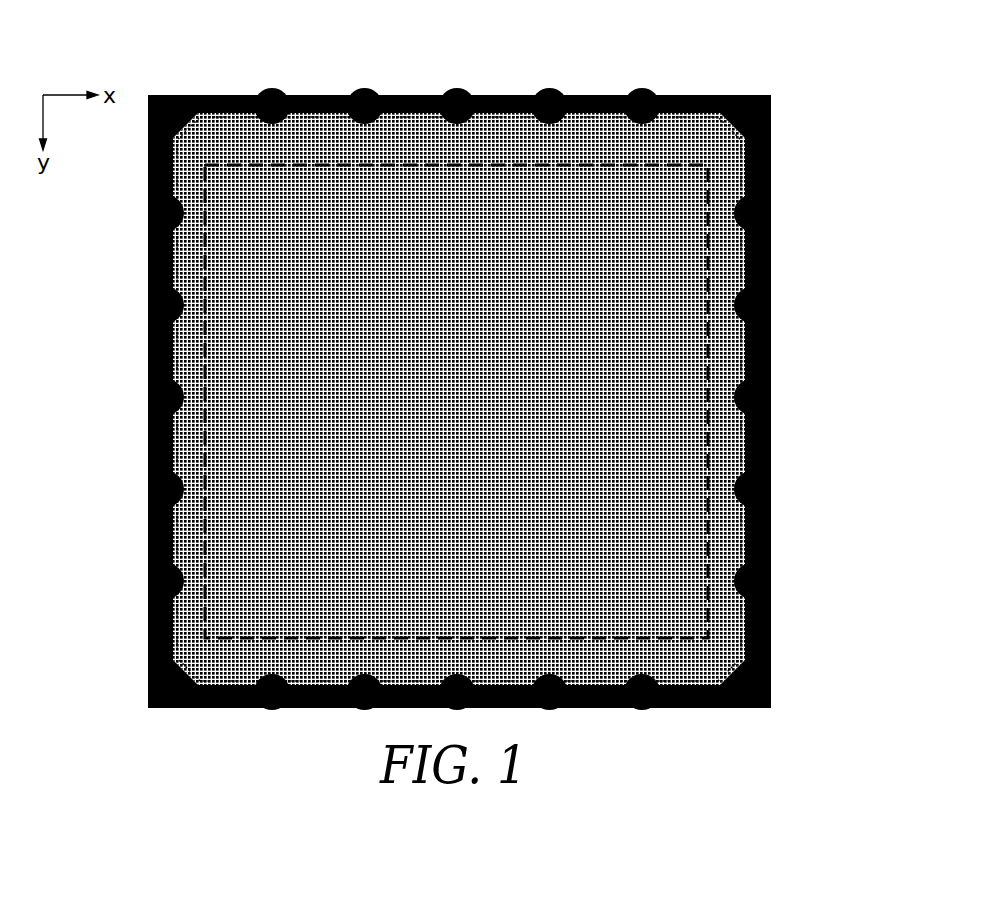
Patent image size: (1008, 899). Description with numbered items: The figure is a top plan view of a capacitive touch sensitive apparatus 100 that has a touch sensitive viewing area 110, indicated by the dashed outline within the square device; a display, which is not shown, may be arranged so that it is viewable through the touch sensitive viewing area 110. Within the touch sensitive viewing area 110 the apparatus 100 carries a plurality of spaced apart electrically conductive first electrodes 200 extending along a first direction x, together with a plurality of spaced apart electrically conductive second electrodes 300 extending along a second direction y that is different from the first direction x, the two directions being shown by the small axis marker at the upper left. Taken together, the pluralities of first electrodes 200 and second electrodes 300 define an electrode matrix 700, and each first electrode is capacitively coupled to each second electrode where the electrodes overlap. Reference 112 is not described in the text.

The capacitive touch sensitive apparatus 100 is at (516, 356).
The touch sensitive viewing area 110 is at (663, 163).
The top surface of substrate 112 is at (518, 138).
The first electrodes 200 is at (742, 170).
The second electrodes 300 is at (233, 120).
The electrode matrix 700 is at (770, 307).